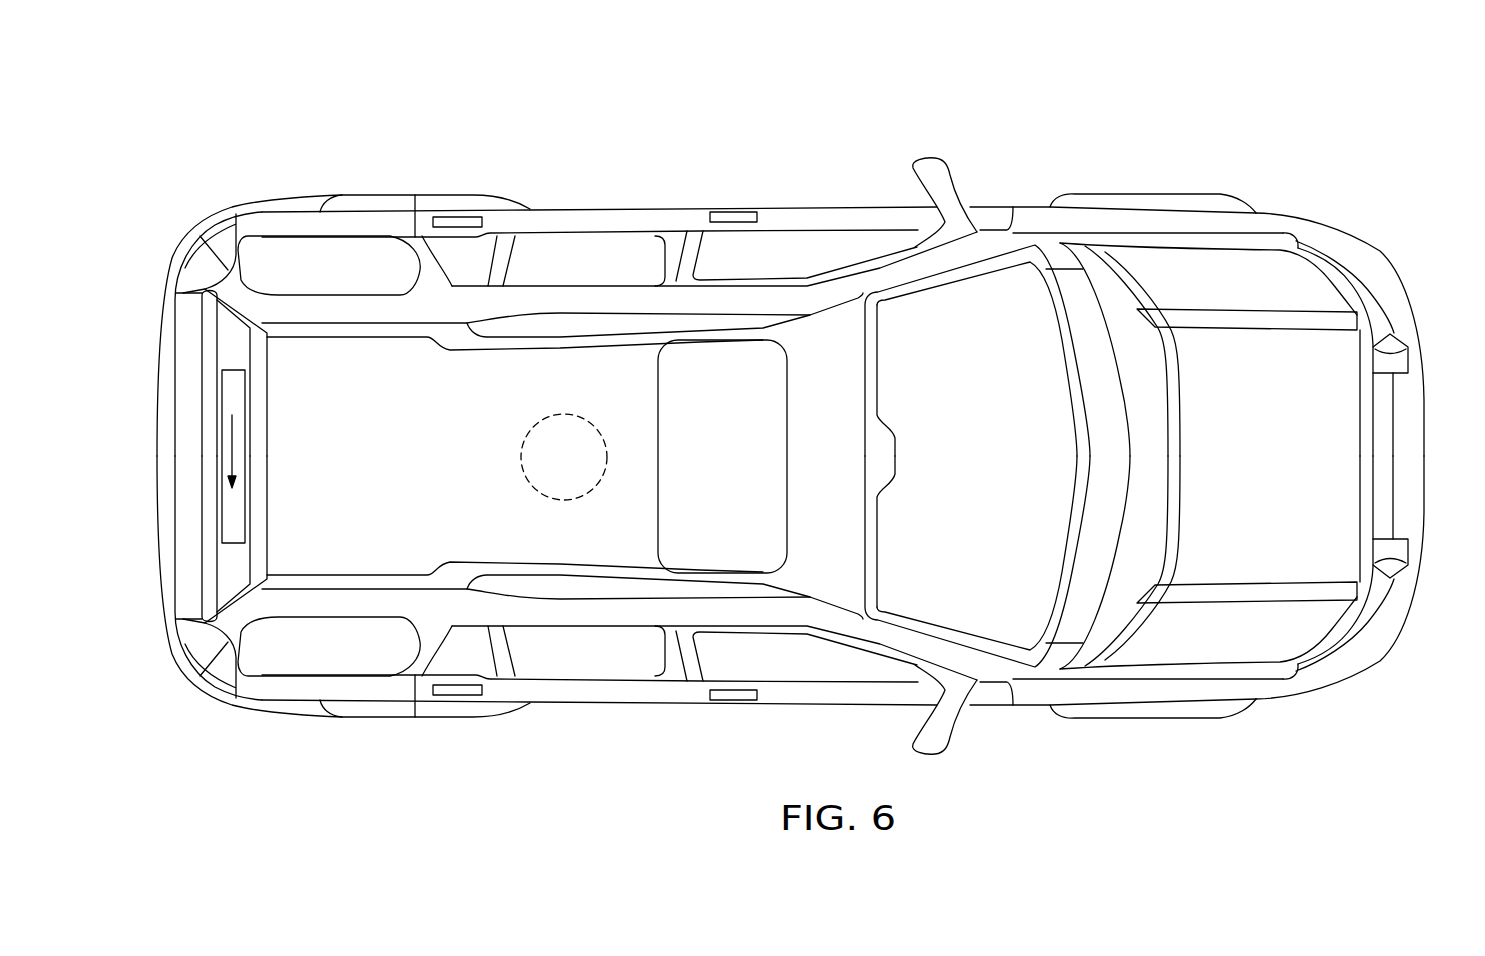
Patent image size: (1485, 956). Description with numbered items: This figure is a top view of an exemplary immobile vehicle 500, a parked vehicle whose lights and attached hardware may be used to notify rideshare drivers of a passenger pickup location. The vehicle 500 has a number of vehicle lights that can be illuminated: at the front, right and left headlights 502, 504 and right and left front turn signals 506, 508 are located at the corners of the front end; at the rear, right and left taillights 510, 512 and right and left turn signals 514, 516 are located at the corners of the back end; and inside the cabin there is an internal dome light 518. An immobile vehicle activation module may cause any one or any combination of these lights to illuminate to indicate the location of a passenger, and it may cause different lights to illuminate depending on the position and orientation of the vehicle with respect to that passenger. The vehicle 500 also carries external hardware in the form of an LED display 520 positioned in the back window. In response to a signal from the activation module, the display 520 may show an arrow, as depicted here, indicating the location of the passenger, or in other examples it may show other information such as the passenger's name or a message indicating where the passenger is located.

The immobile vehicle 500 is at (250, 133).
The right headlight 502 is at (1360, 622).
The left headlight 504 is at (1360, 290).
The right front turn signal 506 is at (1307, 672).
The left front turn signal 508 is at (1307, 240).
The right taillight 510 is at (198, 647).
The left taillight 512 is at (198, 267).
The right turn signal 514 is at (217, 675).
The left turn signal 516 is at (217, 237).
The internal dome light 518 is at (522, 460).
The LED display 520 is at (237, 405).